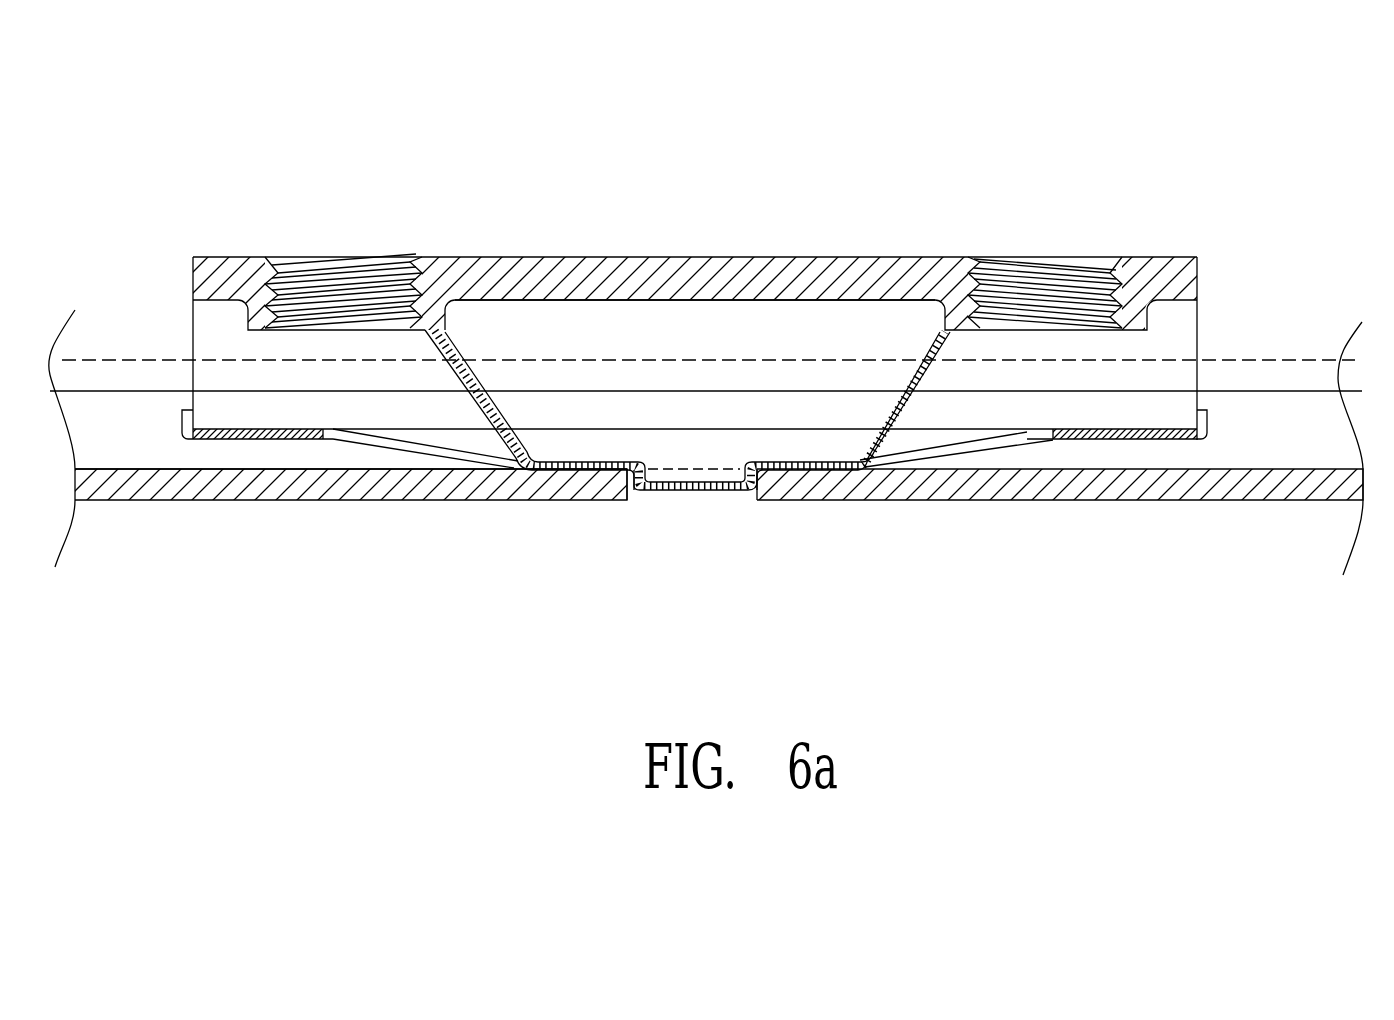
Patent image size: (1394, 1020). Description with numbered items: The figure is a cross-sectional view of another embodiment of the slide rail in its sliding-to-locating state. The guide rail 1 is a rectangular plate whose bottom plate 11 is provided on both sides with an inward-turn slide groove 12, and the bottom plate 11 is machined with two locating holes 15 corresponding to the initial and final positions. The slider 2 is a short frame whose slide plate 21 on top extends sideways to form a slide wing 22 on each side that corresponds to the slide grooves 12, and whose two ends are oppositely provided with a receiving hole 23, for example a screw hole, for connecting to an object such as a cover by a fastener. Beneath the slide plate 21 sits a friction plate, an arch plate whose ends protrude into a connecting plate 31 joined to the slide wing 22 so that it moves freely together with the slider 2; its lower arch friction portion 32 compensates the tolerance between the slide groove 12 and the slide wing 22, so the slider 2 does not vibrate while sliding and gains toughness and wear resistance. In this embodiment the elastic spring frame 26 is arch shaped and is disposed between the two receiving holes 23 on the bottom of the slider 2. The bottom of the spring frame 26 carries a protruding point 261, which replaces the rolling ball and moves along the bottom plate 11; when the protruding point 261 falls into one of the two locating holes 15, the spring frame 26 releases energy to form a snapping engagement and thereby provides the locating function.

The guide rail 1 is at (940, 500).
The bottom plate 11 is at (445, 499).
The slide groove 12 is at (1265, 417).
The locating hole 15 is at (630, 500).
The slider 2 is at (608, 257).
The slide plate 21 is at (758, 257).
The slide wing 22 is at (1038, 407).
The receiving hole 23 is at (344, 270).
The elastic spring frame 26 is at (497, 463).
The protruding point 261 is at (697, 490).
The connecting plate 31 is at (1206, 430).
The lower arch friction portion 32 is at (835, 466).